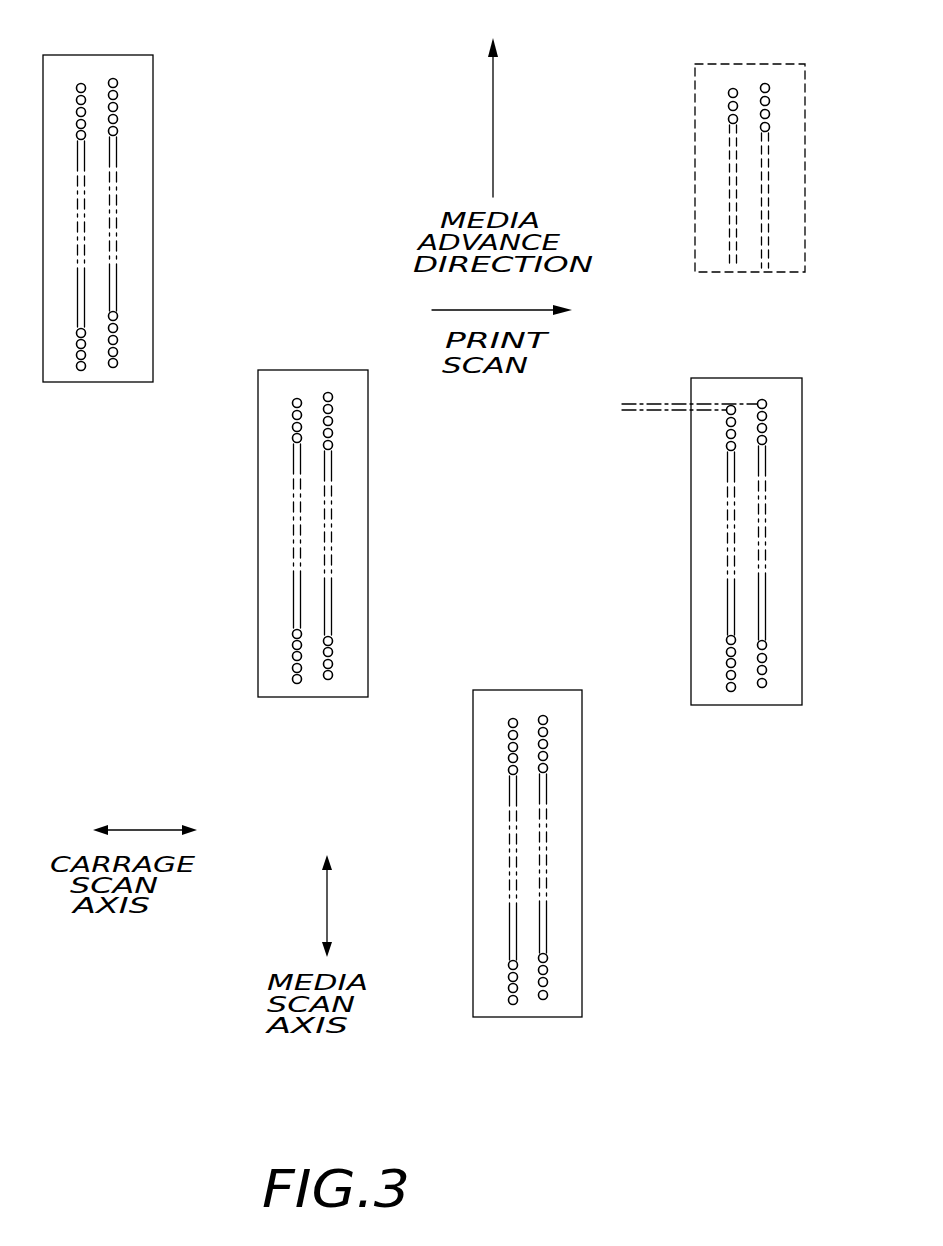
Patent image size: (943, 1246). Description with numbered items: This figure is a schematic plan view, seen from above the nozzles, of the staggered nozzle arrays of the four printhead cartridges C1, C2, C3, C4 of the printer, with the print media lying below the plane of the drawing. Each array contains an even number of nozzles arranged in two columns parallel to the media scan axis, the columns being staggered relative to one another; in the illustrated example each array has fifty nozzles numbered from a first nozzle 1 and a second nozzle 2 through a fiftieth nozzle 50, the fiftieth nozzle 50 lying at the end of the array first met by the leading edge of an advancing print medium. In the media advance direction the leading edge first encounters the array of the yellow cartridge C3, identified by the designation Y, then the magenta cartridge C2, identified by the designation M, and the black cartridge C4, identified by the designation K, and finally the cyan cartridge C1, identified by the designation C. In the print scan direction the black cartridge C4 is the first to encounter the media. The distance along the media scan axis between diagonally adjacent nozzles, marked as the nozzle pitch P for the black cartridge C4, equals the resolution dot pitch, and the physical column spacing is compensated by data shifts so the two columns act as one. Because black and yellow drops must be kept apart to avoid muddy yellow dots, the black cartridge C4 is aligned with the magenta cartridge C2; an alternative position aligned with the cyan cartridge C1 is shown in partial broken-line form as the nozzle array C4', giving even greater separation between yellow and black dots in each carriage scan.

The first nozzle 1 is at (113, 78).
The second nozzle 2 is at (80, 83).
The fiftieth nozzle 50 is at (81, 370).
The cyan printhead cartridge C1 is at (153, 200).
The magenta printhead cartridge C2 is at (368, 505).
The yellow printhead cartridge C3 is at (582, 850).
The black printhead cartridge C4 is at (774, 541).
The alternative black nozzle array C4' is at (779, 168).
The cyan designation C is at (137, 72).
The magenta designation M is at (350, 389).
The yellow designation Y is at (565, 705).
The black designation K is at (784, 393).
The nozzle pitch P is at (639, 447).